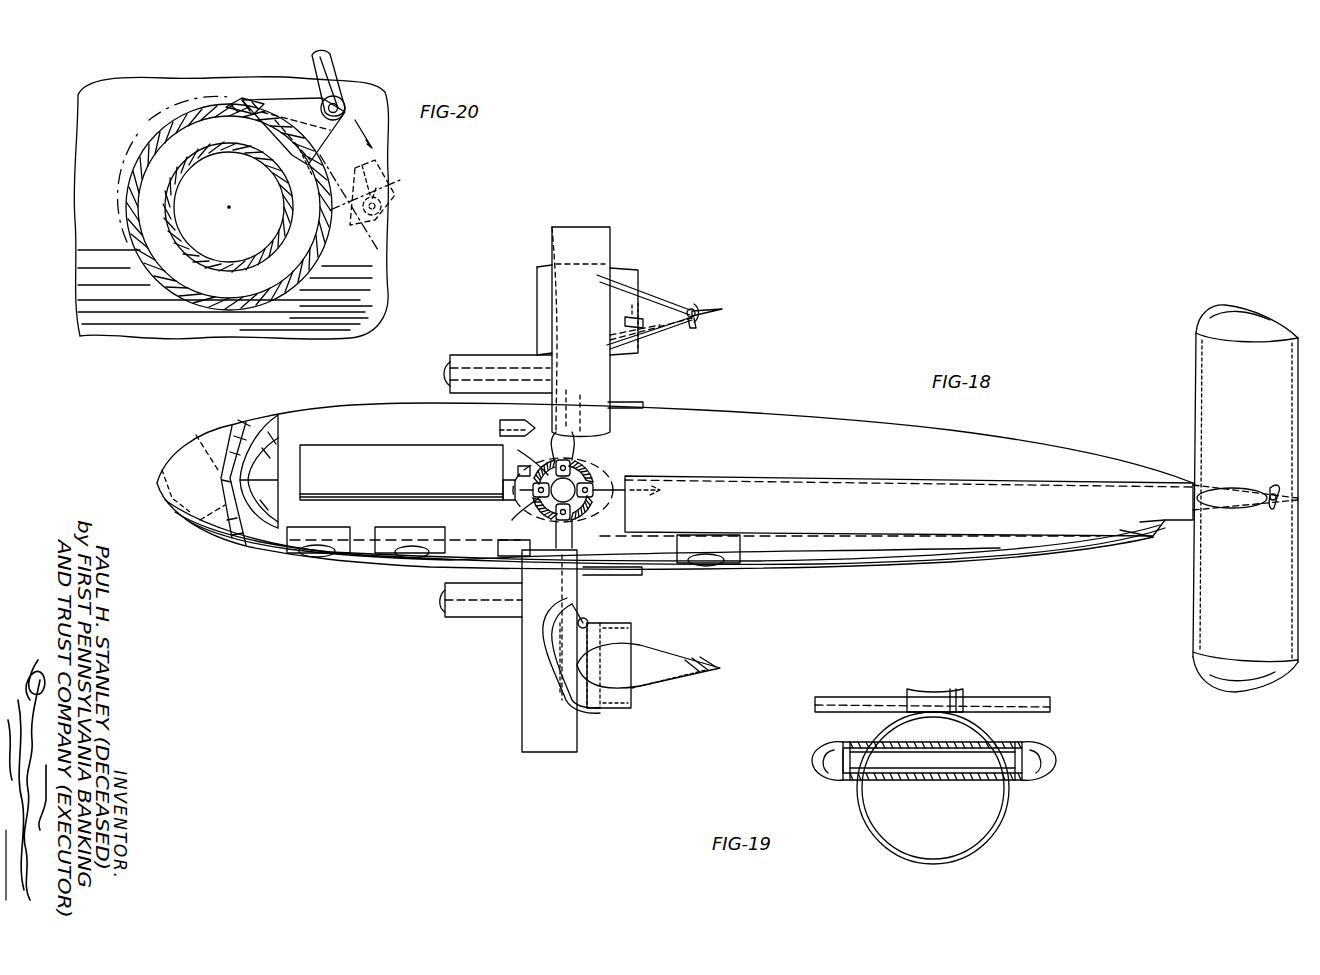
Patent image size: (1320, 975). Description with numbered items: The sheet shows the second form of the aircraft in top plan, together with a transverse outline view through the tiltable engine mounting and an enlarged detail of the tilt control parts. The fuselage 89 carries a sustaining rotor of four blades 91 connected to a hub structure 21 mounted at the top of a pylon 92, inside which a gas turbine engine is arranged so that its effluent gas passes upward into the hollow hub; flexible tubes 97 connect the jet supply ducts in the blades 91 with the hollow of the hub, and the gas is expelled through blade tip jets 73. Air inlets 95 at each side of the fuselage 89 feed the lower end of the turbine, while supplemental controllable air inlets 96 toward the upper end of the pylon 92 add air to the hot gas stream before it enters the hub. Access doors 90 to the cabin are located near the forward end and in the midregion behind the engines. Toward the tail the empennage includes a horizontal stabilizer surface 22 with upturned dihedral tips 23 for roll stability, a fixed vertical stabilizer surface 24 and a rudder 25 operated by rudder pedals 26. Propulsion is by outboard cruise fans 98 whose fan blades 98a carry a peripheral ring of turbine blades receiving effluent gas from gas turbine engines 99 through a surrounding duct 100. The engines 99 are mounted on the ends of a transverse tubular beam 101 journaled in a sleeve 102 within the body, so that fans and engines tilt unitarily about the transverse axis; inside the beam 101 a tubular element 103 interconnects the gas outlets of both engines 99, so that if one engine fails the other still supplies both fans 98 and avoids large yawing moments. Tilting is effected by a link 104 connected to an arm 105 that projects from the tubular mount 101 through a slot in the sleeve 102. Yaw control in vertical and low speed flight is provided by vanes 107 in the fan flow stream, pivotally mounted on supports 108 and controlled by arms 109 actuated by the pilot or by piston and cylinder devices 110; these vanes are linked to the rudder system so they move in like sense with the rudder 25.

In FIG. 18, the hub structure 21 is at (555, 498).
In FIG. 18, the horizontal stabilizer surface 22 is at (1225, 358).
In FIG. 19, the horizontal stabilizer surface 22 is at (880, 704).
In FIG. 18, the upturned dihedral tips 23 is at (1222, 318).
In FIG. 18, the fixed vertical stabilizer surface 24 is at (1222, 490).
In FIG. 18, the rudder 25 is at (1278, 510).
In FIG. 18, the rudder pedals 26 is at (208, 442).
In FIG. 18, the blade tip jets 73 is at (1172, 522).
In FIG. 18, the fuselage 89 is at (850, 428).
In FIG. 18, the access doors 90 is at (338, 552).
In FIG. 18, the blades 91 is at (580, 240).
In FIG. 19, the pylon 92 is at (950, 700).
In FIG. 18, the air inlets 95 is at (505, 420).
In FIG. 18, the supplemental controllable air inlets 96 is at (526, 466).
In FIG. 18, the flexible tubes 97 is at (600, 478).
In FIG. 18, the cruise fans 98 is at (626, 243).
In FIG. 18, the fan blades 98a is at (545, 652).
In FIG. 18, the gas turbine engines 99 is at (494, 362).
In FIG. 19, the gas turbine engines 99 is at (818, 760).
In FIG. 18, the duct 100 is at (588, 624).
In FIG. 20, the transverse tubular beam 101 is at (128, 170).
In FIG. 19, the transverse tubular beam 101 is at (1025, 750).
In FIG. 20, the sleeve 102 is at (238, 92).
In FIG. 19, the sleeve 102 is at (876, 774).
In FIG. 20, the tubular element 103 is at (225, 262).
In FIG. 19, the tubular element 103 is at (986, 756).
In FIG. 20, the link 104 is at (334, 58).
In FIG. 20, the arm 105 is at (312, 112).
In FIG. 18, the vanes 107 is at (712, 304).
In FIG. 18, the supports 108 is at (660, 308).
In FIG. 18, the arms 109 is at (696, 320).
In FIG. 18, the piston and cylinder devices 110 is at (632, 318).